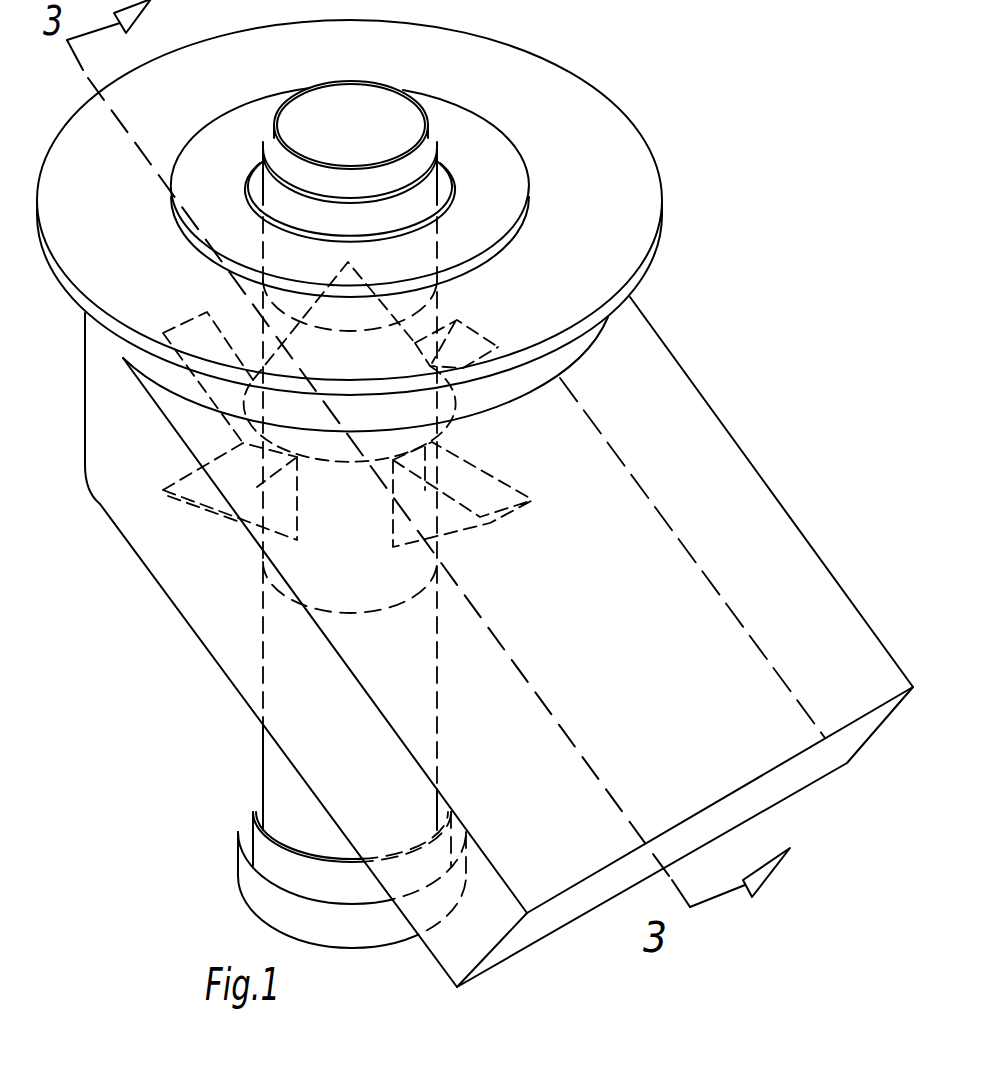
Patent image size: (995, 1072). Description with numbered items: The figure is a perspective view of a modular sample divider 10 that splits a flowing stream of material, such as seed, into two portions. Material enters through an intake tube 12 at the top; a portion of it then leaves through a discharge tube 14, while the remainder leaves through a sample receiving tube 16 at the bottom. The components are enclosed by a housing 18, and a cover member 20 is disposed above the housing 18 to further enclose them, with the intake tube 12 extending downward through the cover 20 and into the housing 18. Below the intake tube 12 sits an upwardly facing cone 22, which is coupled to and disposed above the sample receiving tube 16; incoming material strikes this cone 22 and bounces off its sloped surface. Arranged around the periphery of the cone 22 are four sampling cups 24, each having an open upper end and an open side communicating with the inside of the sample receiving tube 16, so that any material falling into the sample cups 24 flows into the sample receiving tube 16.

The modular sample divider 10 is at (751, 207).
The intake tube 12 is at (362, 119).
The discharge tube 14 is at (768, 488).
The sample receiving tube 16 is at (268, 792).
The housing 18 is at (87, 388).
The cover member 20 is at (612, 133).
The cone 22 is at (404, 310).
The sampling cups 24 is at (186, 323).